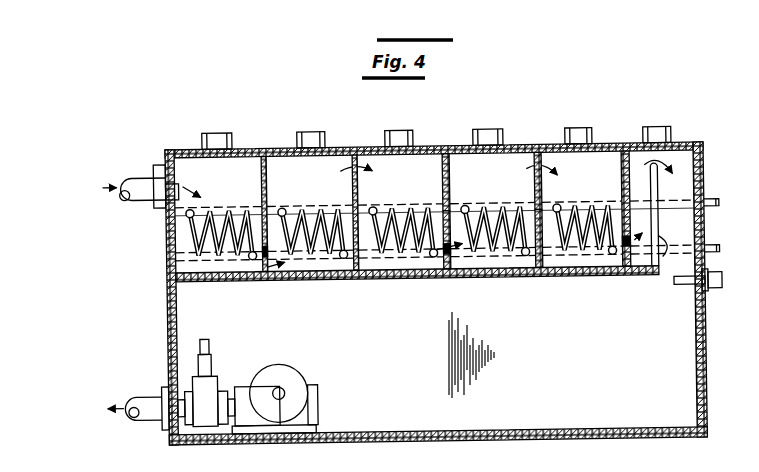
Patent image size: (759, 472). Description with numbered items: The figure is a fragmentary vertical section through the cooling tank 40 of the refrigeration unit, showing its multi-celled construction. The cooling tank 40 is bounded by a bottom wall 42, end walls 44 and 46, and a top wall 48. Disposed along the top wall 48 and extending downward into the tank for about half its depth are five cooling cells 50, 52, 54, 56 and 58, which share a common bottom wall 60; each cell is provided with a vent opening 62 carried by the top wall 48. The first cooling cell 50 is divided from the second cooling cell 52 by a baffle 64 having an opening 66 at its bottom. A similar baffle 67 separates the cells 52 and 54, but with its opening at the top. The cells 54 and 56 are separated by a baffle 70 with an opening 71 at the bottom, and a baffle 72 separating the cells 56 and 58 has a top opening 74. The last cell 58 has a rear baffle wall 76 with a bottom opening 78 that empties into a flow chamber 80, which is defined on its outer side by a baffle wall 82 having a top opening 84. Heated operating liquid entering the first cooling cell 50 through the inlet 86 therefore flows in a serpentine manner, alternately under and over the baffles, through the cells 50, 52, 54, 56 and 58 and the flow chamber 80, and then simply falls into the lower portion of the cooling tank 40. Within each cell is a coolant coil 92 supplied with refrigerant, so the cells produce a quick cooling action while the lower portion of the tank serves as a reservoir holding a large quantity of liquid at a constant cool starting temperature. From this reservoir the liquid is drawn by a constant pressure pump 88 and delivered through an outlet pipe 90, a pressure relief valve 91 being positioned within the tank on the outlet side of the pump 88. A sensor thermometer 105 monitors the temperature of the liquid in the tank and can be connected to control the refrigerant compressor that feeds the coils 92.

The cooling tank 40 is at (690, 152).
The bottom wall 42 is at (354, 435).
The end wall 44 is at (168, 315).
The end wall 46 is at (700, 378).
The top wall 48 is at (446, 199).
The first cooling cell 50 is at (197, 186).
The second cooling cell 52 is at (291, 185).
The cooling cell 54 is at (384, 182).
The cooling cell 56 is at (477, 182).
The cooling cell 58 is at (566, 180).
The common bottom wall 60 is at (409, 284).
The vent opening 62 is at (298, 145).
The baffle 64 is at (260, 189).
The opening 66 is at (264, 272).
The baffle 67 is at (349, 203).
The baffle 70 is at (449, 204).
The opening 71 is at (453, 277).
The baffle 72 is at (532, 203).
The top opening 74 is at (541, 168).
The rear baffle wall 76 is at (621, 172).
The bottom opening 78 is at (616, 279).
The flow chamber 80 is at (642, 224).
The baffle wall 82 is at (672, 255).
The top opening 84 is at (668, 214).
The inlet 86 is at (140, 180).
The constant pressure pump 88 is at (275, 367).
The outlet pipe 90 is at (126, 395).
The pressure relief valve 91 is at (208, 366).
The coolant coil 92 is at (198, 263).
The sensor thermometer 105 is at (686, 298).